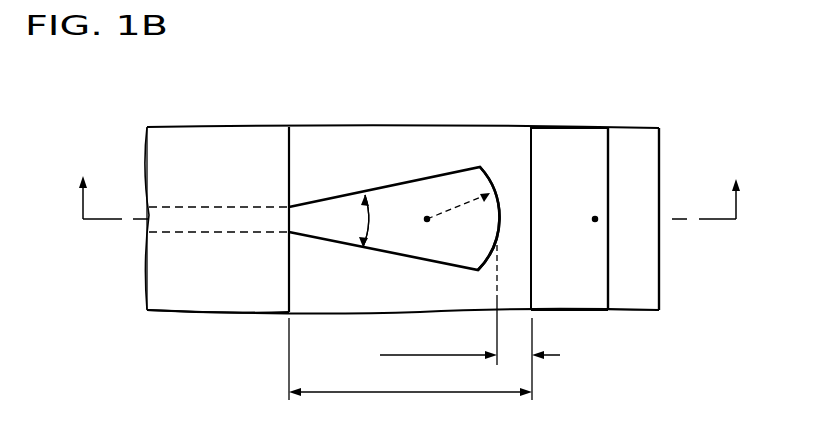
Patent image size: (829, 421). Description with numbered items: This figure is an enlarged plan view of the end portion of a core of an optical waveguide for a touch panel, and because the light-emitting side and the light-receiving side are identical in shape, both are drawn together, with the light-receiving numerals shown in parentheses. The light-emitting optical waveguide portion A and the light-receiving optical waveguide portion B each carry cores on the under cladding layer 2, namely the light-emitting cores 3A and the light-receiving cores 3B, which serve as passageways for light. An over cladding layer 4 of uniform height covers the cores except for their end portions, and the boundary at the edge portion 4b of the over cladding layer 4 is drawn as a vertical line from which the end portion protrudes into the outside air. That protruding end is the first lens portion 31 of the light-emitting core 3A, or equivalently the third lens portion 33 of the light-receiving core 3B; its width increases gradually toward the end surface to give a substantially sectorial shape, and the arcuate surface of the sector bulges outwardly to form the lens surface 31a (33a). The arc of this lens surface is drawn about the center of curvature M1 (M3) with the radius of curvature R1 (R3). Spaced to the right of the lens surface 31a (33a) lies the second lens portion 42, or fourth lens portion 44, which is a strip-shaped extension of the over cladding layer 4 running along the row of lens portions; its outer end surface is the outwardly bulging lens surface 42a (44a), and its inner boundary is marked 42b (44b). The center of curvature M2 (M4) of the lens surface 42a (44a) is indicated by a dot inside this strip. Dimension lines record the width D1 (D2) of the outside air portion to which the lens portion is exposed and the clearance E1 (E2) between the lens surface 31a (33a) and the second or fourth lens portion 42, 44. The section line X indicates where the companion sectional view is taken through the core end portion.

The under cladding layer 2 is at (323, 141).
The over cladding layer 4 is at (184, 138).
The light-emitting core 3A is at (214, 211).
The light-receiving core 3B is at (219, 142).
The edge portion of over cladding layer 4b is at (291, 143).
The first lens portion 31 is at (388, 186).
The third lens portion 33 is at (394, 161).
The lens surface 31a is at (488, 170).
The lens surface 33a is at (525, 161).
The center of curvature M1 is at (427, 216).
The center of curvature M3 is at (415, 137).
The radius of curvature R1 is at (457, 205).
The radius of curvature R3 is at (467, 136).
The second lens portion 42 is at (590, 137).
The fourth lens portion 44 is at (609, 181).
The lens surface 42a is at (653, 147).
The lens surface 44a is at (702, 181).
The inner edge of second region 42b is at (530, 160).
The inner edge (alternative) 44b is at (577, 181).
The center of curvature M2 is at (595, 219).
The center of curvature M4 is at (635, 297).
The clearance E1 is at (470, 322).
The clearance E2 is at (470, 322).
The width of outside air portion D1 is at (410, 359).
The width of outside air portion D2 is at (410, 359).
The light-emitting optical waveguide portion A is at (177, 312).
The light-receiving optical waveguide portion B is at (218, 343).
The section line X- X is at (410, 180).